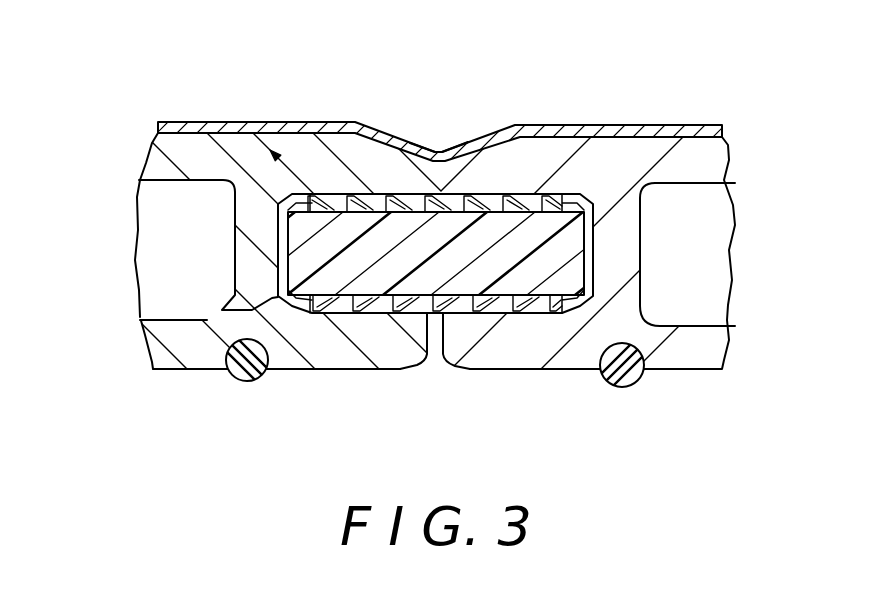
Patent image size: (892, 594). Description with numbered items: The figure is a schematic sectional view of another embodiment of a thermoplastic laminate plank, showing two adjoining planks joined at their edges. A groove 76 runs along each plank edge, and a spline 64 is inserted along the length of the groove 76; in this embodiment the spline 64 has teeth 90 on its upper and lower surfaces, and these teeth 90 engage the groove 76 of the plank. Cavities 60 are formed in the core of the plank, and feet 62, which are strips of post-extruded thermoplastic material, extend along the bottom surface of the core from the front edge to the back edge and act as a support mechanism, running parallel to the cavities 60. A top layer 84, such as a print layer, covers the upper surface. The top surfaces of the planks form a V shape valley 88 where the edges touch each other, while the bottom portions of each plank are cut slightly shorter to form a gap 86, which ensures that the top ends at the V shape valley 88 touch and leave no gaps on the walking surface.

The cavities 60 is at (690, 280).
The feet 62 is at (603, 384).
The spline 64 is at (240, 124).
The groove 76 is at (222, 310).
The top layer 84 is at (569, 124).
The gap 86 is at (432, 379).
The V shape valley 88 is at (440, 142).
The teeth 90 is at (378, 193).